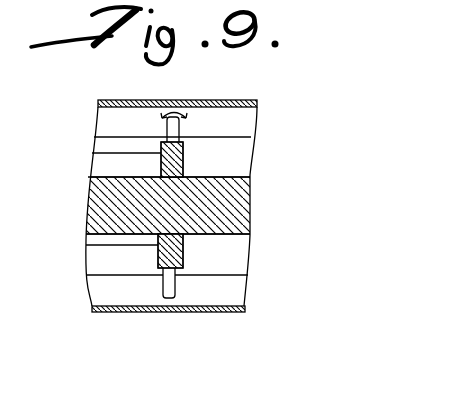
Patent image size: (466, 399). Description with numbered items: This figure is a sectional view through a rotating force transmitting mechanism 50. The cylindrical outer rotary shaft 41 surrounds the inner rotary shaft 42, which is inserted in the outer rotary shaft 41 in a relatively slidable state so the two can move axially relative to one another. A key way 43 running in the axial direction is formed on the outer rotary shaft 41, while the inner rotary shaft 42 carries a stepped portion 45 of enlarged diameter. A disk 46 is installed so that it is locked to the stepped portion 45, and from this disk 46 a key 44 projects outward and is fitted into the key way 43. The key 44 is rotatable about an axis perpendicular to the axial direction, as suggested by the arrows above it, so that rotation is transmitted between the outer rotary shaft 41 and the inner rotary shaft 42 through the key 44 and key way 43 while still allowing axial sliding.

The outer rotary shaft 41 is at (235, 103).
The inner rotary shaft 42 is at (230, 198).
The key way 43 is at (223, 118).
The key 44 is at (167, 125).
The stepped portion 45 is at (161, 177).
The disk 46 is at (161, 163).
The rotating force transmitting mechanism 50 is at (222, 315).